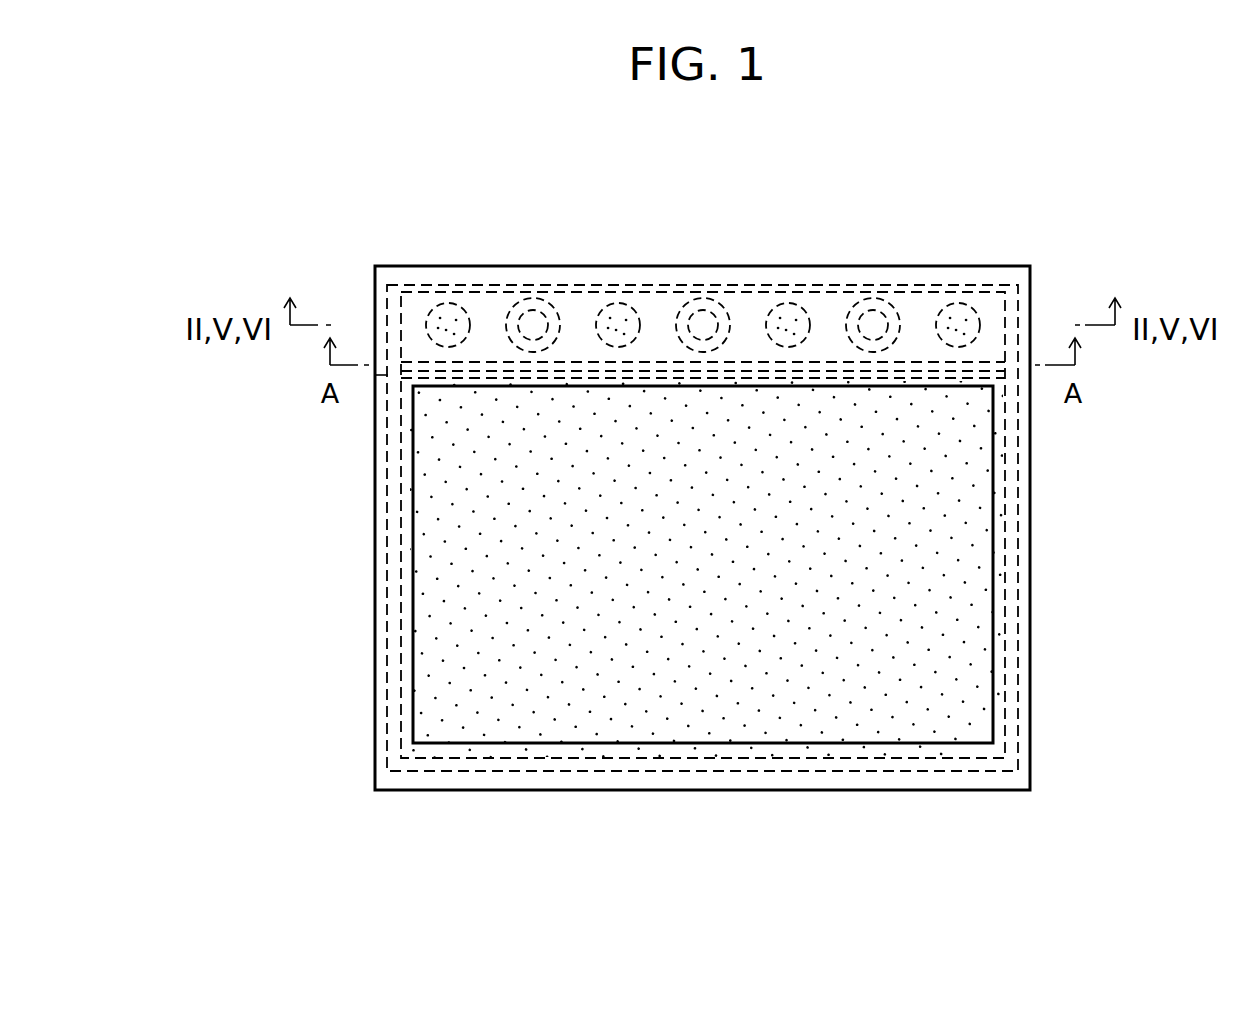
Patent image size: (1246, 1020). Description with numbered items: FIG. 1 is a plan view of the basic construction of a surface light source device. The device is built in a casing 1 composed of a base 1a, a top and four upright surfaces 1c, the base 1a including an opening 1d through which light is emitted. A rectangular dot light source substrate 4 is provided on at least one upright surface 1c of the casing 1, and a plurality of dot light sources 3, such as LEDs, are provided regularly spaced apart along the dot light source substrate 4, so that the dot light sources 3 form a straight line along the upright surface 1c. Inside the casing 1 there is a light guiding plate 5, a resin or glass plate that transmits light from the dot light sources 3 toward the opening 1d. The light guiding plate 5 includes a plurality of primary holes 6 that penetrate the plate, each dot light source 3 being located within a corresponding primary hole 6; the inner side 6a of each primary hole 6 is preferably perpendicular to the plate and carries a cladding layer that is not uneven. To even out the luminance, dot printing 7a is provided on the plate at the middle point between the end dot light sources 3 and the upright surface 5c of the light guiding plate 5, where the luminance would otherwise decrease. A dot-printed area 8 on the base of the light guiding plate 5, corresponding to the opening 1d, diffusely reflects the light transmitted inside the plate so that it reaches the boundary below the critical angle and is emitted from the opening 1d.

The casing 1 is at (497, 790).
The base 1a is at (567, 778).
The upright surfaces 1c is at (640, 262).
The opening 1d is at (819, 704).
The dot light sources 3 is at (872, 318).
The dot light source substrate 4 is at (663, 320).
The light guiding plate 5 is at (891, 768).
The upright surface of the light guiding plate 5c is at (821, 291).
The primary holes 6 is at (560, 322).
The inner side of the primary hole 6a is at (543, 298).
The dot printing 7a is at (445, 303).
The dot-printed area 8 is at (712, 710).